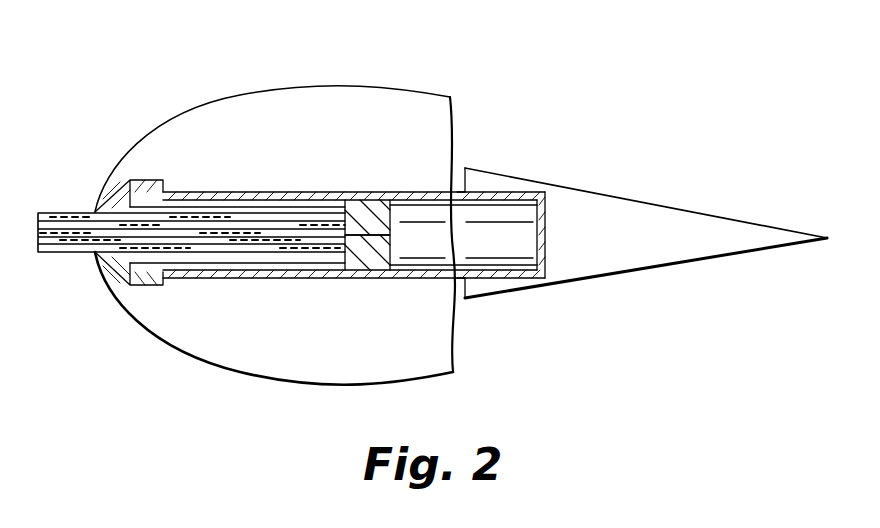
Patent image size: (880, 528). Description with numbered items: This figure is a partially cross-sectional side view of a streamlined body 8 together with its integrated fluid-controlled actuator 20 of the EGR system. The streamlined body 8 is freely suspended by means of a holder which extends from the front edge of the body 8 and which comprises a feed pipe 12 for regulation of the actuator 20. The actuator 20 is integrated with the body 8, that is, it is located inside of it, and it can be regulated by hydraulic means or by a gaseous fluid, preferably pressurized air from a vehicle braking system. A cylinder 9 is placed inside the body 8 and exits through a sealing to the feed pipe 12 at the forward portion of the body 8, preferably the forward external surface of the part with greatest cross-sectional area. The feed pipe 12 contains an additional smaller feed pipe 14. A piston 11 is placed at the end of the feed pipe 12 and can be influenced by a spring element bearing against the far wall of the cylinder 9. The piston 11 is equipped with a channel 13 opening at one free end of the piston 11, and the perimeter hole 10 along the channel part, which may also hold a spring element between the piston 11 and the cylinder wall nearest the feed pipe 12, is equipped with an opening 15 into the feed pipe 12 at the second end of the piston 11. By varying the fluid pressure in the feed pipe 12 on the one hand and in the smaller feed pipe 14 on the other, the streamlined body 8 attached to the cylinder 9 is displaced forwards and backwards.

The streamlined body 8 is at (501, 78).
The cylinder 9 is at (457, 262).
The perimeter hole 10 is at (206, 272).
The piston 11 is at (392, 260).
The feed pipe 12 is at (74, 252).
The channel 13 is at (393, 235).
The smaller feed pipe 14 is at (36, 232).
The opening 15 is at (284, 219).
The actuator 20 is at (345, 162).